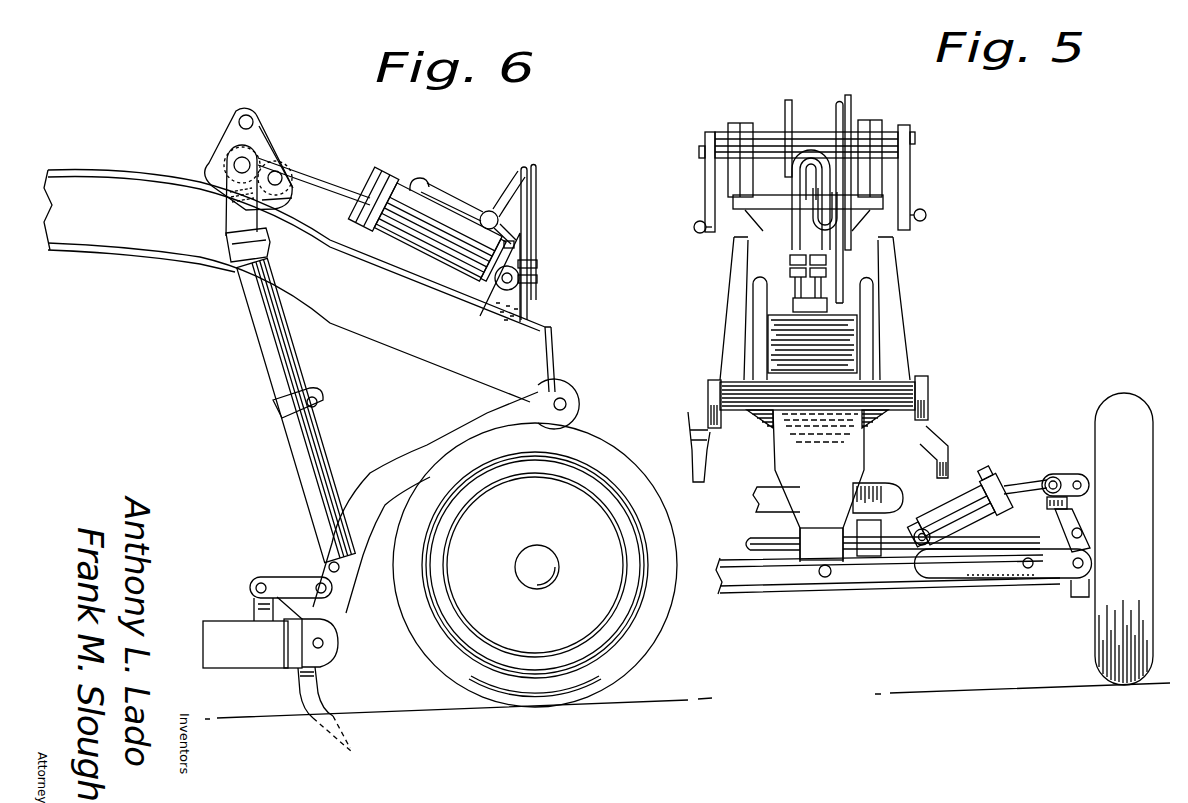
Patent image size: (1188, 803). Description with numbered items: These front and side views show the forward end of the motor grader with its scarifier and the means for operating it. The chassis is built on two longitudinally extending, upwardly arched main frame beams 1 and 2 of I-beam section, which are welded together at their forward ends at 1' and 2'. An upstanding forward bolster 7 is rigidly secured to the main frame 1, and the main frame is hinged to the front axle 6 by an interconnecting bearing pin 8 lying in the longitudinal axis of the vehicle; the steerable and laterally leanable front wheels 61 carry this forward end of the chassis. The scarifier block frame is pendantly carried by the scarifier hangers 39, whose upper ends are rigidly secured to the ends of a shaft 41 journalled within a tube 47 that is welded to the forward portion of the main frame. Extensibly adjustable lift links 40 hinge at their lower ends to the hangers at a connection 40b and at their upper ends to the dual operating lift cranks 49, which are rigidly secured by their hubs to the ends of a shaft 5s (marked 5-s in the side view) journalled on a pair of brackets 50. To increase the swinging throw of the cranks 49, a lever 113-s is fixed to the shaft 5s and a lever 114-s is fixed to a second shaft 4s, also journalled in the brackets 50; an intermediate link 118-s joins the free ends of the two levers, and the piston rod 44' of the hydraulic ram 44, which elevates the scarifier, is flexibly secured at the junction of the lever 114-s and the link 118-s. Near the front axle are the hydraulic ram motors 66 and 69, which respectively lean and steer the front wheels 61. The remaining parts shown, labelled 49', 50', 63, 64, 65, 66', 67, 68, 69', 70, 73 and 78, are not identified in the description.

In FIG. 6, the main frame beam 1 is at (294, 286).
In FIG. 5, the main frame beam 1 is at (722, 308).
In FIG. 5, the forward end of main frame beam 1' is at (770, 310).
In FIG. 5, the main frame beam 2 is at (907, 308).
In FIG. 5, the forward end of main frame beam 2' is at (812, 342).
In FIG. 6, the shaft 4s is at (288, 180).
In FIG. 5, the shaft 4s is at (770, 120).
In FIG. 5, the shaft 5s is at (760, 140).
In FIG. 6, the shaft 5-s is at (253, 162).
In FIG. 5, the front axle 6 is at (787, 573).
In FIG. 6, the forward bolster 7 is at (551, 358).
In FIG. 5, the forward bolster 7 is at (757, 352).
In FIG. 5, the bearing pin 8 is at (823, 578).
In FIG. 6, the scarifier hangers 39 is at (425, 449).
In FIG. 5, the scarifier hangers 39 is at (691, 453).
In FIG. 6, the lift link 40 is at (268, 390).
In FIG. 6, the hinge connection of lift link to hanger 40b is at (329, 562).
In FIG. 6, the shaft 41 is at (567, 404).
In FIG. 6, the hydraulic ram 44 is at (434, 237).
In FIG. 5, the hydraulic ram 44 is at (854, 274).
In FIG. 6, the ram piston rod 44' is at (441, 235).
In FIG. 5, the ram piston rod 44' is at (823, 183).
In FIG. 5, the tube 47 is at (880, 387).
In FIG. 6, the operating lift cranks 49 is at (215, 190).
In FIG. 5, the operating lift cranks 49 is at (805, 178).
In FIG. 6, the clamp nut / pin 49' is at (221, 265).
In FIG. 5, the clamp nut / pin 49' is at (810, 222).
In FIG. 6, the brackets 50 is at (297, 192).
In FIG. 5, the brackets 50 is at (812, 138).
In FIG. 5, the chamfer / gusset 50' is at (809, 238).
In FIG. 6, the front wheels 61 is at (627, 652).
In FIG. 5, the front wheels 61 is at (1107, 633).
In FIG. 5, the pivot pin 63 is at (1084, 563).
In FIG. 5, the rail 64 is at (762, 497).
In FIG. 5, the bracket 65 is at (1068, 515).
In FIG. 5, the hydraulic ram motor 66 is at (973, 498).
In FIG. 5, the cylinder pivot 66' is at (946, 568).
In FIG. 5, the link 67 is at (1002, 563).
In FIG. 5, the rod end bracket 68 is at (1048, 478).
In FIG. 5, the hydraulic ram motor 69 is at (884, 487).
In FIG. 5, the block 69' is at (870, 571).
In FIG. 5, the column neck 70 is at (840, 590).
In FIG. 5, the bracket 73 is at (1085, 585).
In FIG. 5, the rail 78 is at (748, 544).
In FIG. 6, the lever 113-s is at (233, 163).
In FIG. 6, the lever 114-s is at (270, 127).
In FIG. 6, the intermediate link 118-s is at (232, 136).